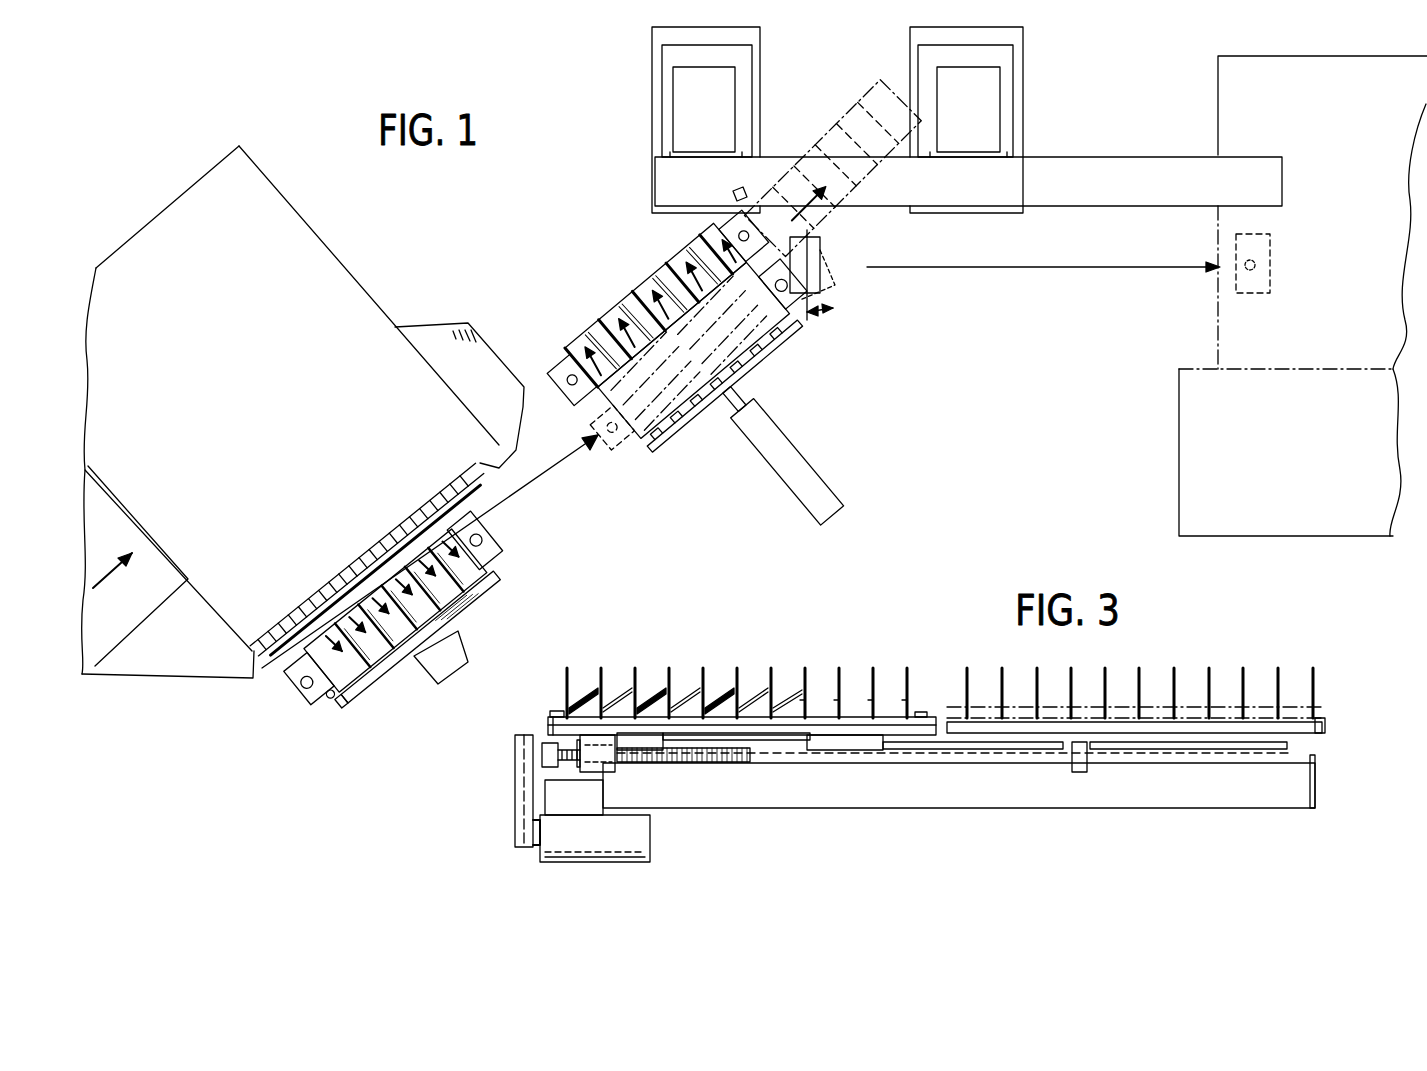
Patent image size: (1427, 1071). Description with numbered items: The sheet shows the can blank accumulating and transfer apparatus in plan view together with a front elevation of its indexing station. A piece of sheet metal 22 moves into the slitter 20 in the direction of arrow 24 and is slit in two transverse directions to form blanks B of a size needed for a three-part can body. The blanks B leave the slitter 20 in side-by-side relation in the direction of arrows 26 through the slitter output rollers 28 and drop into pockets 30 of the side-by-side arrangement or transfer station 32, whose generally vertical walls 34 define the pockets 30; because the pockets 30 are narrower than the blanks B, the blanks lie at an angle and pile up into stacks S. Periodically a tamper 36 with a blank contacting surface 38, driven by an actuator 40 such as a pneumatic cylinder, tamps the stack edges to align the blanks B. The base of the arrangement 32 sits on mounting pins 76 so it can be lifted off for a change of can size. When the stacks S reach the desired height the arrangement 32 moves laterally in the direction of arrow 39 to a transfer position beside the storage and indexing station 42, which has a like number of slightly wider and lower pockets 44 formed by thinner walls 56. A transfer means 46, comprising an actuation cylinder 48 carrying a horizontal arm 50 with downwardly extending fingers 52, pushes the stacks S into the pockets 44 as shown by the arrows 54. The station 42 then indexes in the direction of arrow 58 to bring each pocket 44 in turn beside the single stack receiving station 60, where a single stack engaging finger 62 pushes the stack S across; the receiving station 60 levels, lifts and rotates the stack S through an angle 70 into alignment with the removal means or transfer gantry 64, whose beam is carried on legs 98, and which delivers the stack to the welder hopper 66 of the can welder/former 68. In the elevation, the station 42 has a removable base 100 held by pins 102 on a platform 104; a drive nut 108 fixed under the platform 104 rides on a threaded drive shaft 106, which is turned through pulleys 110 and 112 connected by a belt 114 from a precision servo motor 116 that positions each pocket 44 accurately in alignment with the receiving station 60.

In FIG. 1, the slitter 20 is at (300, 232).
In FIG. 1, the piece of sheet metal 22 is at (103, 648).
In FIG. 1, the arrow 24 is at (110, 572).
In FIG. 1, the arrows 26 is at (290, 672).
In FIG. 1, the slitter output rollers 28 is at (265, 650).
In FIG. 1, the pockets 30 is at (338, 700).
In FIG. 1, the side-by-side arrangement or transfer station 32 is at (470, 575).
In FIG. 1, the vertical walls 34 is at (462, 575).
In FIG. 1, the tamper 36 is at (483, 605).
In FIG. 1, the blank contacting surface 38 is at (350, 705).
In FIG. 1, the arrow 39 is at (572, 460).
In FIG. 1, the actuator 40 is at (436, 684).
In FIG. 1, the storage and indexing station 42 is at (566, 347).
In FIG. 3, the storage and indexing station 42 is at (578, 668).
In FIG. 1, the pockets 44 is at (630, 298).
In FIG. 3, the pockets 44 is at (640, 682).
In FIG. 1, the transfer means 46 is at (690, 440).
In FIG. 1, the actuation cylinder 48 is at (776, 467).
In FIG. 1, the horizontal arm 50 is at (752, 365).
In FIG. 1, the fingers 52 is at (775, 335).
In FIG. 1, the arrows 54 is at (612, 318).
In FIG. 1, the walls 56 is at (650, 278).
In FIG. 3, the walls 56 is at (702, 678).
In FIG. 1, the arrow 58 is at (800, 182).
In FIG. 1, the single stack receiving station 60 is at (835, 285).
In FIG. 1, the single stack engaging finger 62 is at (733, 193).
In FIG. 1, the removal means or transfer gantry 64 is at (1080, 157).
In FIG. 1, the welder hopper 66 is at (1232, 278).
In FIG. 1, the can welder/former 68 is at (1218, 340).
In FIG. 1, the angle 70 is at (833, 312).
In FIG. 1, the mounting pins 76 is at (305, 690).
In FIG. 1, the legs 98 is at (662, 100).
In FIG. 3, the base 100 is at (950, 722).
In FIG. 1, the pins 102 is at (568, 385).
In FIG. 3, the pins 102 is at (556, 712).
In FIG. 3, the platform 104 is at (548, 726).
In FIG. 3, the threaded drive shaft 106 is at (692, 762).
In FIG. 3, the drive nut 108 is at (615, 772).
In FIG. 3, the pulley 110 is at (515, 760).
In FIG. 3, the pulley 112 is at (518, 838).
In FIG. 3, the belt 114 is at (522, 800).
In FIG. 3, the precision servo motor 116 is at (612, 862).
In FIG. 1, the blanks B is at (445, 495).
In FIG. 1, the stacks S is at (445, 590).
In FIG. 3, the stacks S is at (756, 680).